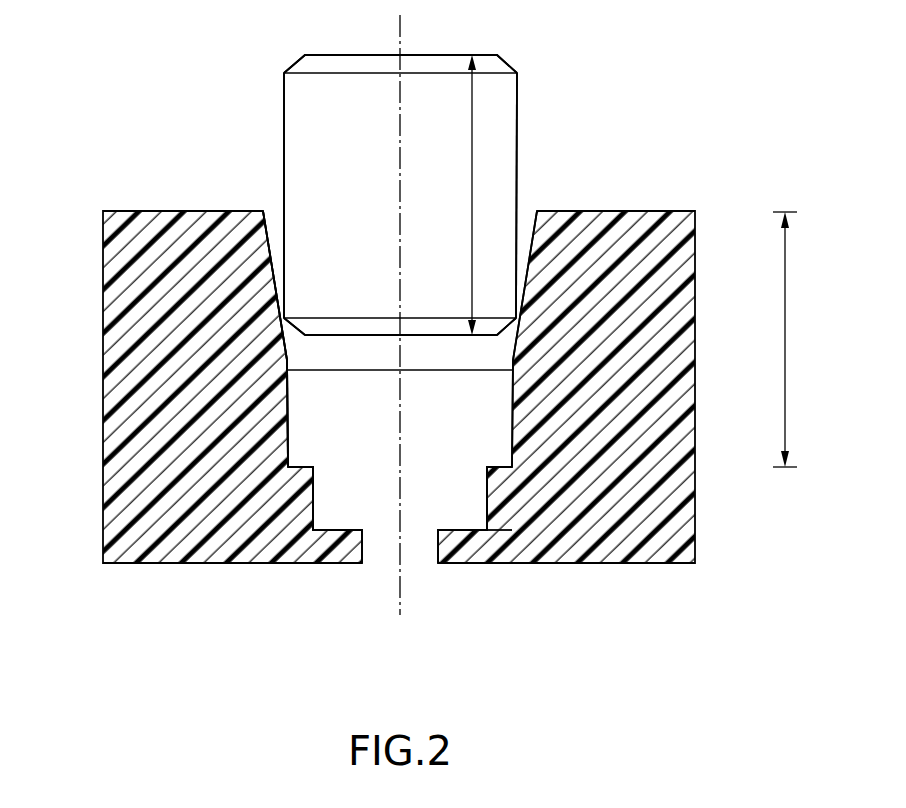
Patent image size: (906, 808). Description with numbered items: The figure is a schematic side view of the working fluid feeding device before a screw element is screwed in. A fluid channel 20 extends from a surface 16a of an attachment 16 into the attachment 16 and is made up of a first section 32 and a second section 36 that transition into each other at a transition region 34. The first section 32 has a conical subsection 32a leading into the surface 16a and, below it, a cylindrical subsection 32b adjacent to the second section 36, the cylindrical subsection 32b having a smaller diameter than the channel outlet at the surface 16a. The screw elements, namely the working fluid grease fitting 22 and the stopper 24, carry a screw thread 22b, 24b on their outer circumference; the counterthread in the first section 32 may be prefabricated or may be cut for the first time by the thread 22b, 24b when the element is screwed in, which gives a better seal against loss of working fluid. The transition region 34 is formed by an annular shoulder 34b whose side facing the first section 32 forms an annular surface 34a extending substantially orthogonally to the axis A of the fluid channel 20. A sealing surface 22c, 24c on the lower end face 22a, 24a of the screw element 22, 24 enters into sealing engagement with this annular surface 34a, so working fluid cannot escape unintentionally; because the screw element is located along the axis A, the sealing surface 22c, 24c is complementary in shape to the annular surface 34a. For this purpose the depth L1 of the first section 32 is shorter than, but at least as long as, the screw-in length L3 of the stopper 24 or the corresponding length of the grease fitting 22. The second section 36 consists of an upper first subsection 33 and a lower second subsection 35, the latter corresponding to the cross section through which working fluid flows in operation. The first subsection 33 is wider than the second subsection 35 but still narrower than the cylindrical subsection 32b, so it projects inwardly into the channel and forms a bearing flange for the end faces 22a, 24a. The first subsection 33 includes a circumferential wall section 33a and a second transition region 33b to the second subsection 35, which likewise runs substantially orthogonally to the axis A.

The attachment 16 is at (118, 556).
The surface of attachment 16a is at (567, 211).
The fluid channel 20 is at (498, 358).
The working fluid grease fitting 22 is at (500, 100).
The lower end face of working fluid grease fitting 22a is at (422, 336).
The screw thread of working fluid grease fitting 22b is at (531, 250).
The sealing surface of working fluid grease fitting 22c is at (505, 328).
The stopper 24 is at (300, 101).
The lower end face of stopper 24a is at (460, 337).
The screw thread of stopper 24b is at (284, 233).
The sealing surface of stopper 24c is at (283, 337).
The first section 32 is at (520, 350).
The conical subsection 32a is at (273, 277).
The cylindrical subsection 32b is at (287, 388).
The first subsection 33 is at (484, 490).
The circumferential wall section 33a is at (484, 524).
The second transition region 33b is at (505, 531).
The transition region 34 is at (284, 490).
The annular surface 34a is at (293, 464).
The annular shoulder 34b is at (300, 472).
The second subsection 35 is at (368, 546).
The second section 36 is at (472, 556).
The axis of fluid channel A is at (400, 140).
The depth of first section L1 is at (787, 362).
The screw-in length of stopper L3 is at (472, 148).